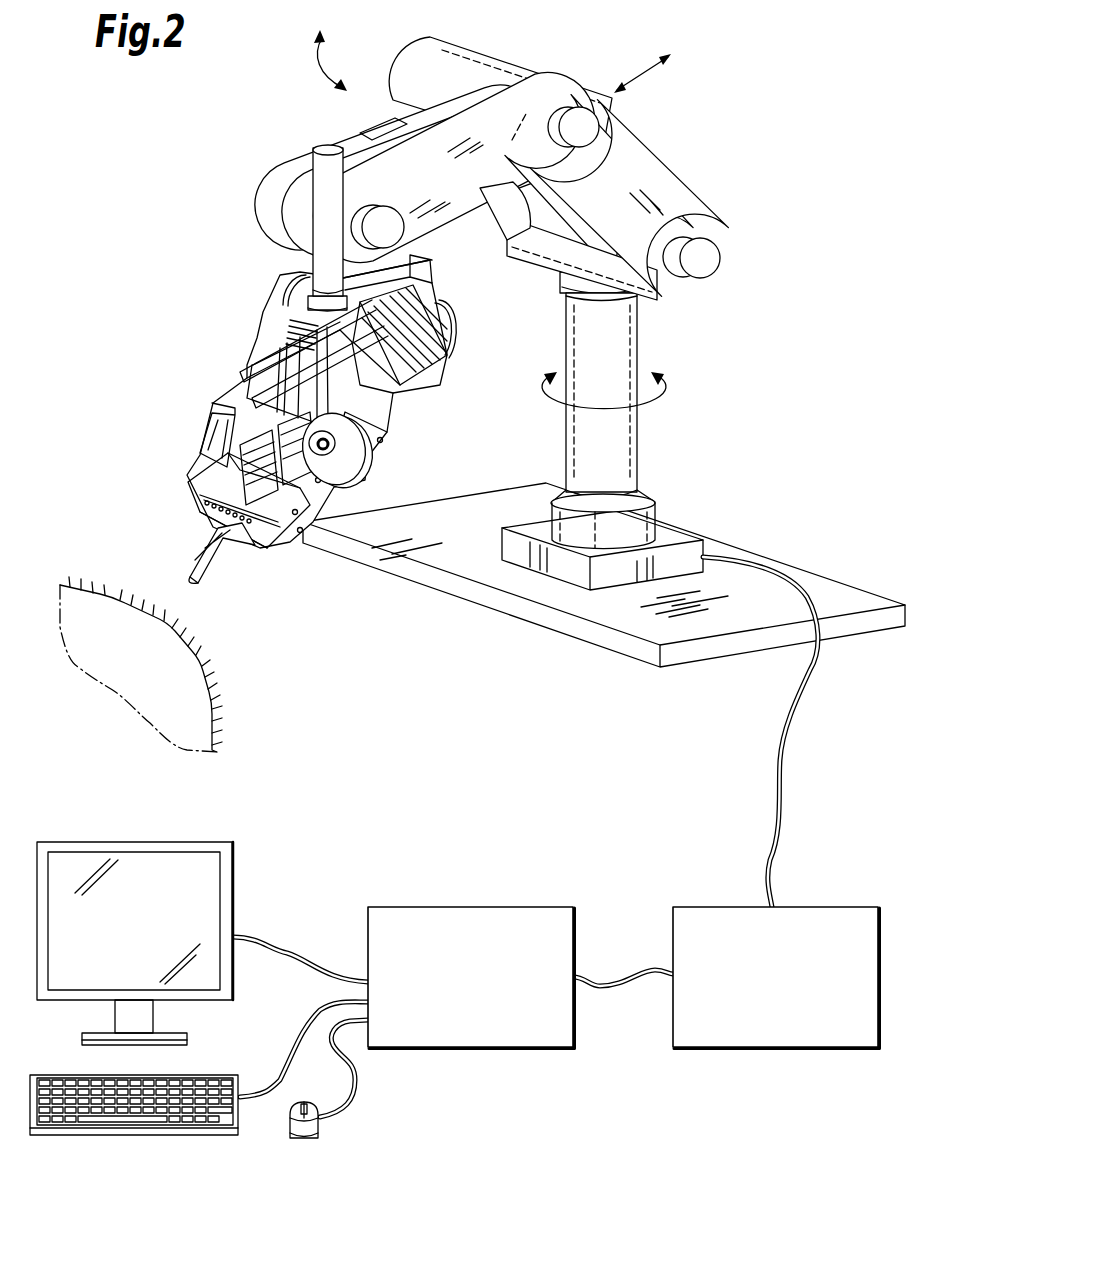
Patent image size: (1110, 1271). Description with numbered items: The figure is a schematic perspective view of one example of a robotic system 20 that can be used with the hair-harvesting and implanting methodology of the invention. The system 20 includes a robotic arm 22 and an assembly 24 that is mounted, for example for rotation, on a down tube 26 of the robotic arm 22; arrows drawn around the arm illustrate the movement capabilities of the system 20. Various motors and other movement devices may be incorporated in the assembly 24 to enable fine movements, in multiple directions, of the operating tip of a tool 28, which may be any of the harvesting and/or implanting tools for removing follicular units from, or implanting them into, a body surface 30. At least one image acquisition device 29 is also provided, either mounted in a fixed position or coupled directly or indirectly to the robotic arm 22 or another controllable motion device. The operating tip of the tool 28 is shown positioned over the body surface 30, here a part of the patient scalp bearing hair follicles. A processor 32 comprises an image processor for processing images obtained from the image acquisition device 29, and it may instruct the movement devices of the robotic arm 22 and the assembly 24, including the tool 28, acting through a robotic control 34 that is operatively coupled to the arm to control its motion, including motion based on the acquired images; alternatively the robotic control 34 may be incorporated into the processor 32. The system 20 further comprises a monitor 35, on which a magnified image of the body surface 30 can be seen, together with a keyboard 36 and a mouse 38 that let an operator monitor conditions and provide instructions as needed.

The robotic system 20 is at (138, 263).
The robotic arm 22 is at (668, 158).
The assembly 24 is at (186, 430).
The down tube 26 is at (313, 268).
The tool 28 is at (186, 566).
The image acquisition device 29 is at (230, 407).
The body surface 30 is at (167, 622).
The processor 32 is at (518, 907).
The robotic control 34 is at (833, 907).
The monitor 35 is at (228, 873).
The keyboard 36 is at (102, 1135).
The mouse 38 is at (307, 1140).